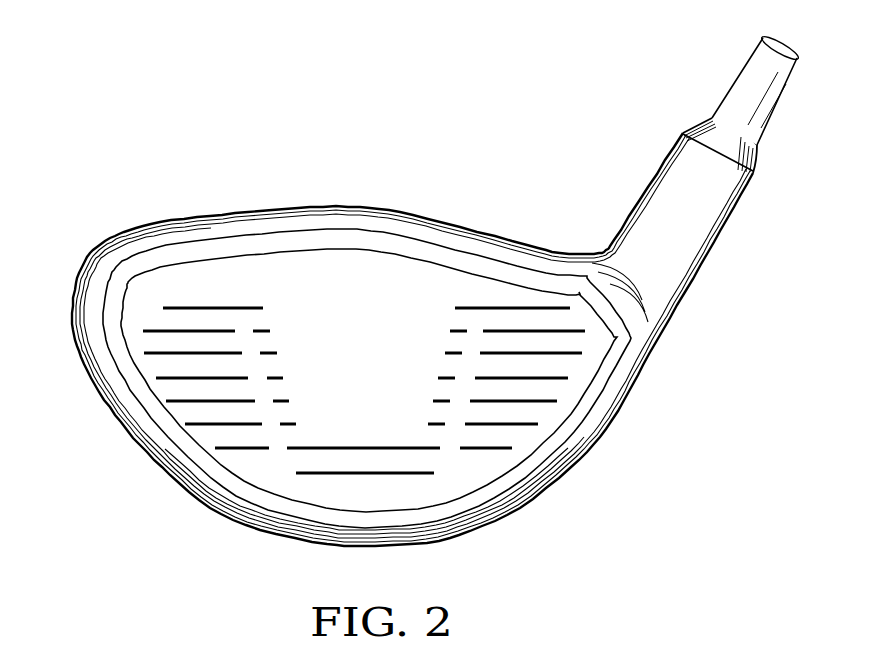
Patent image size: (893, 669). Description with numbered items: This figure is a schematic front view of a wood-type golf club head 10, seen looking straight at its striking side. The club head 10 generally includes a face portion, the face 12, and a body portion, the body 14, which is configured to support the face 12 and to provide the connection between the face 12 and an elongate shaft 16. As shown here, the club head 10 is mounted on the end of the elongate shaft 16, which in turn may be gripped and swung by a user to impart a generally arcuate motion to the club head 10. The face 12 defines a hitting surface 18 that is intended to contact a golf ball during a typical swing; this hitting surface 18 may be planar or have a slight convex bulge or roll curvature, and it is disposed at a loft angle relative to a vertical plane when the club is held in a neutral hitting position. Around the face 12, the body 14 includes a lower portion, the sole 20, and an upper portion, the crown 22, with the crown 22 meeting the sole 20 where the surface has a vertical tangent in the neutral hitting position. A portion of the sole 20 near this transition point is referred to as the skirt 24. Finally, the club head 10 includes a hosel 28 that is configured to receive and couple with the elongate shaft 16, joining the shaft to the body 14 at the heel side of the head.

The golf club head 10 is at (178, 155).
The face portion 12 is at (210, 432).
The body portion 14 is at (412, 193).
The elongate shaft 16 is at (776, 98).
The hitting surface 18 is at (363, 434).
The sole 20 is at (490, 528).
The crown 22 is at (311, 222).
The skirt 24 is at (100, 405).
The hosel 28 is at (605, 243).